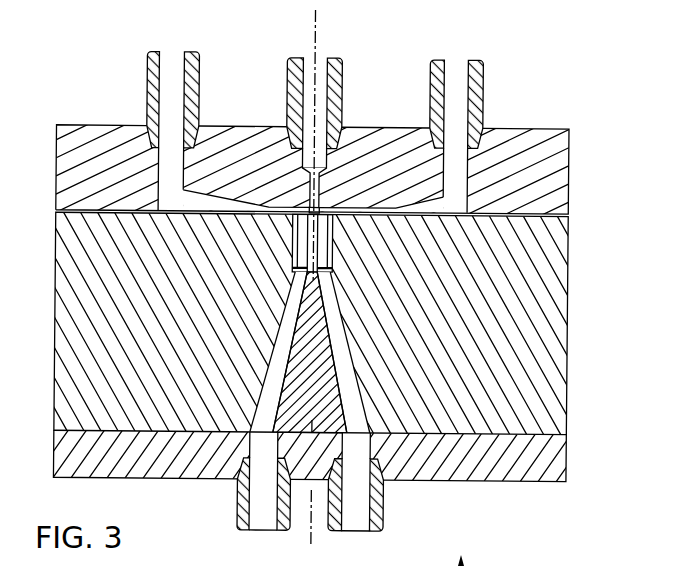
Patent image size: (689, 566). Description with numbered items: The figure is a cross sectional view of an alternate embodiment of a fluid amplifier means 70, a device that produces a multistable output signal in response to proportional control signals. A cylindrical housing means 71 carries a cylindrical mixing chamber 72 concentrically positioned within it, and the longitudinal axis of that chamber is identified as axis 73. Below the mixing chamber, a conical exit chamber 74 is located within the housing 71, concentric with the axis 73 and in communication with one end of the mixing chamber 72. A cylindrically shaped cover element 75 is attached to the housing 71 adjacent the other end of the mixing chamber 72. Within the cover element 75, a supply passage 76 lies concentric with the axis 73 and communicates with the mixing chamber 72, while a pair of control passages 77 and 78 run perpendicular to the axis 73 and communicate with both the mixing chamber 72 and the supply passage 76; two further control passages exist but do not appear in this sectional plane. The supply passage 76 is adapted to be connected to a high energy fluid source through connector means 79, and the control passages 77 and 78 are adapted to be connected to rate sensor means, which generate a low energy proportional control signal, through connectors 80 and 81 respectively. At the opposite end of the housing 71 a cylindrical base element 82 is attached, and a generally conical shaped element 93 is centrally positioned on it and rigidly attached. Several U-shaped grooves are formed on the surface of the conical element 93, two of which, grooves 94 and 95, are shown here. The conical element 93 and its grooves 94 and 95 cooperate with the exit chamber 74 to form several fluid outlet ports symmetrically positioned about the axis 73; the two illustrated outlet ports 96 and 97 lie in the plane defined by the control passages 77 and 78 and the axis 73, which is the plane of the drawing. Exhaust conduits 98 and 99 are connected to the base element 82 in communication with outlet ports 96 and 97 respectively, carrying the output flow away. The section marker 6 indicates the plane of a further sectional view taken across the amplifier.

The fluid amplifier means 70 is at (62, 80).
The cylindrical housing means 71 is at (55, 297).
The cylindrical mixing chamber 72 is at (332, 249).
The longitudinal axis 73 is at (313, 38).
The conical exit chamber 74 is at (346, 325).
The cover element 75 is at (568, 177).
The supply passage 76 is at (317, 190).
The control passage 77 is at (270, 206).
The control passage 78 is at (355, 207).
The connector means 79 is at (340, 101).
The connector 80 is at (198, 97).
The connector 81 is at (482, 104).
The bottom plate 82 is at (568, 455).
The conical shaped element 93 is at (301, 414).
The groove 94 is at (321, 320).
The groove 95 is at (295, 366).
The outlet port 96 is at (345, 366).
The outlet port 97 is at (290, 312).
The exhaust conduit 98 is at (385, 500).
The exhaust conduit 99 is at (239, 489).
The section line 6- 6 is at (340, 226).